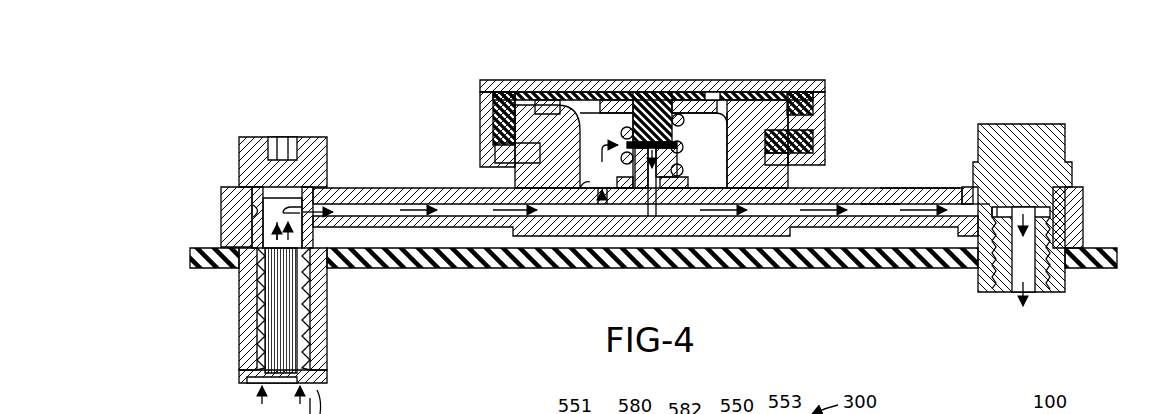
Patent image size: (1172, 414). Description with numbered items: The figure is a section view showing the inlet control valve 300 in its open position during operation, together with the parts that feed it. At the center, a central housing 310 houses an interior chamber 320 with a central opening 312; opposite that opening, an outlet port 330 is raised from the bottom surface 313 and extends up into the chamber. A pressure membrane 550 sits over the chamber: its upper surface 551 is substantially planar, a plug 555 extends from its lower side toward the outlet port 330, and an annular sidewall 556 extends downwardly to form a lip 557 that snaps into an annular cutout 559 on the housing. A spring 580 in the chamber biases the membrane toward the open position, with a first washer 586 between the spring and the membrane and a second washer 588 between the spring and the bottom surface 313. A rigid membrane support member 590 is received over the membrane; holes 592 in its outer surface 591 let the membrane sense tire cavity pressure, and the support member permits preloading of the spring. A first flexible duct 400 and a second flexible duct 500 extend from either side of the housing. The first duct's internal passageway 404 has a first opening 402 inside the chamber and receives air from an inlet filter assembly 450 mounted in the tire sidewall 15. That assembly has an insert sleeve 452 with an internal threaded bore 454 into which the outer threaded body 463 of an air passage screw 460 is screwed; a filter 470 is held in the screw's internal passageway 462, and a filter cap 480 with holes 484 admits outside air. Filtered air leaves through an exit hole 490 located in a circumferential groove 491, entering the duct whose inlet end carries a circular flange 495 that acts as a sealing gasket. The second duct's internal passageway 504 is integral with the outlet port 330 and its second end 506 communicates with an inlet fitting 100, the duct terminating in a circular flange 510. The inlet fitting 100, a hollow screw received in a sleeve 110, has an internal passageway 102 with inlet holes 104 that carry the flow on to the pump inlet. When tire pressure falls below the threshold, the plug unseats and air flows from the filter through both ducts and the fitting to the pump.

The sidewall 15 is at (479, 259).
The inlet fitting 100 is at (1060, 188).
The internal passageway 102 is at (1027, 250).
The inlet holes 104 is at (1007, 207).
The sleeve 110 is at (1063, 283).
The inlet control valve 300 is at (640, 165).
The central housing 310 is at (775, 170).
The central opening 312 is at (582, 127).
The bottom surface 313 is at (580, 180).
The interior chamber 320 is at (715, 125).
The outlet port 330 is at (660, 190).
The first flexible duct 400 is at (383, 188).
The first opening 402 is at (607, 190).
The internal passageway 404 is at (437, 214).
The inlet filter assembly 450 is at (281, 226).
The insert sleeve 452 is at (317, 327).
The internal threaded bore 454 is at (262, 305).
The air passage screw 460 is at (313, 155).
The internal passageway 462 is at (270, 222).
The outer threaded body 463 is at (325, 295).
The filter 470 is at (270, 322).
The filter cap 480 is at (323, 380).
The holes 484 is at (260, 387).
The exit hole 490 is at (310, 206).
The circumferential groove 491 is at (252, 210).
The circular flange 495 is at (227, 187).
The second flexible duct 500 is at (907, 188).
The internal passageway 504 is at (877, 210).
The second end 506 is at (988, 210).
The circular flange 510 is at (1070, 207).
The pressure membrane 550 is at (707, 102).
The upper surface 551 is at (645, 128).
The plug 555 is at (655, 135).
The annular sidewall 556 is at (497, 120).
The lip 557 is at (520, 140).
The annular cutout 559 is at (547, 147).
The spring 580 is at (683, 147).
The first washer 586 is at (612, 100).
The second washer 588 is at (680, 175).
The membrane support member 590 is at (488, 80).
The outer surface 591 is at (537, 80).
The holes 592 is at (752, 85).